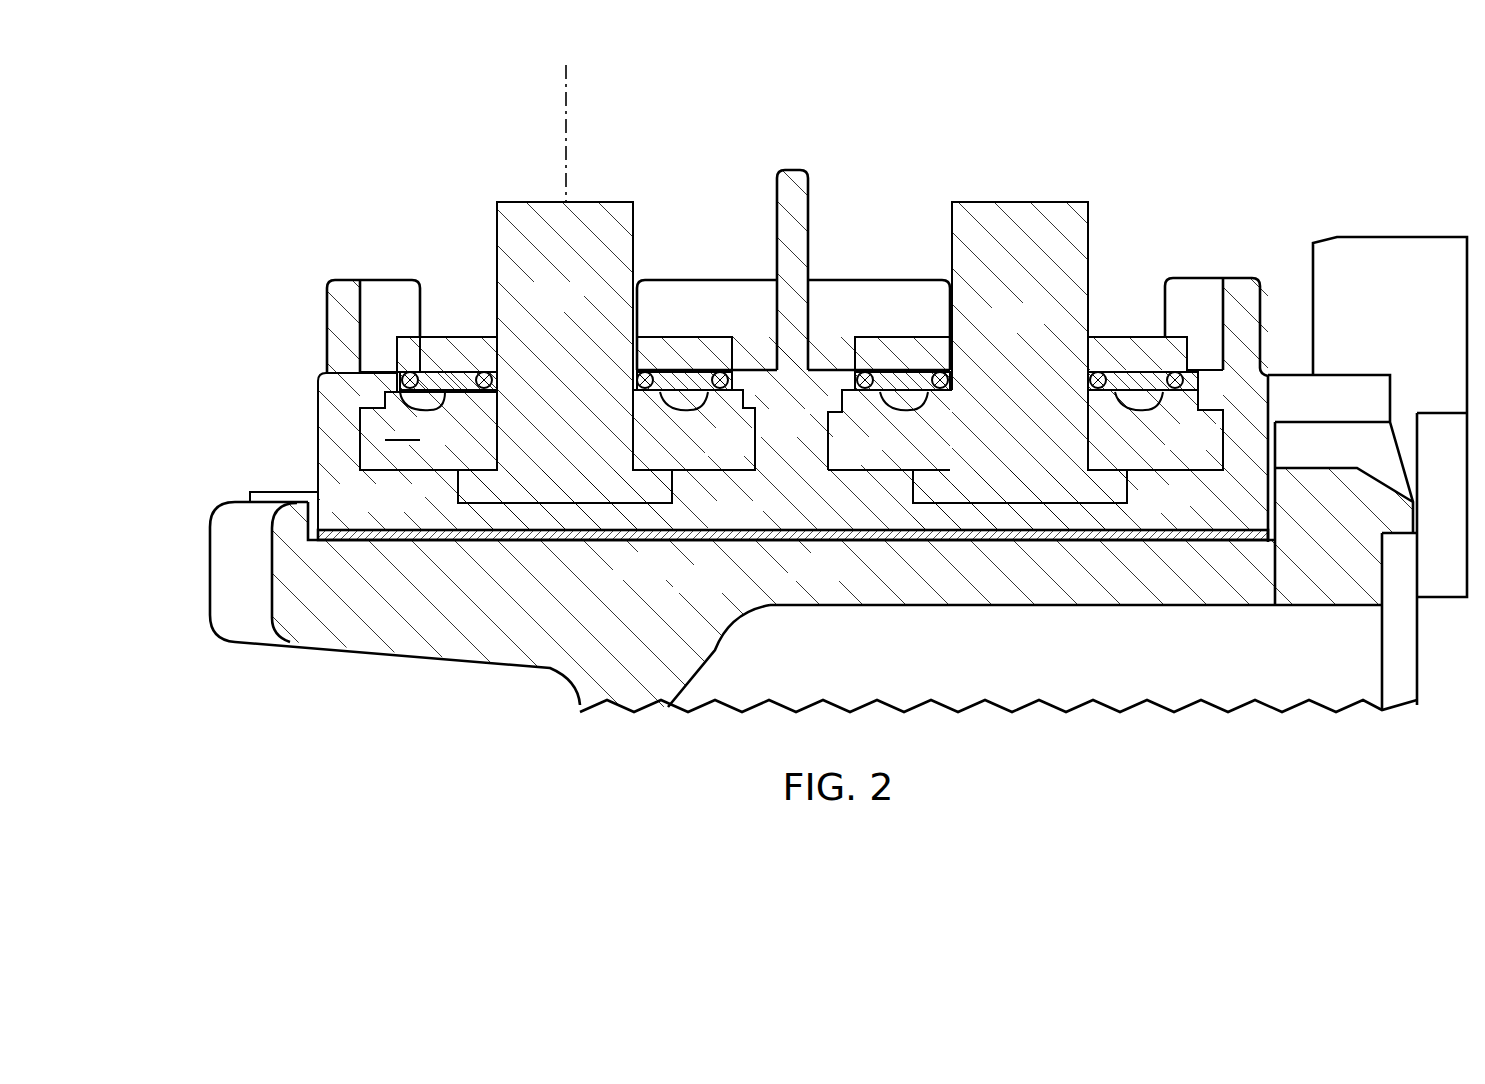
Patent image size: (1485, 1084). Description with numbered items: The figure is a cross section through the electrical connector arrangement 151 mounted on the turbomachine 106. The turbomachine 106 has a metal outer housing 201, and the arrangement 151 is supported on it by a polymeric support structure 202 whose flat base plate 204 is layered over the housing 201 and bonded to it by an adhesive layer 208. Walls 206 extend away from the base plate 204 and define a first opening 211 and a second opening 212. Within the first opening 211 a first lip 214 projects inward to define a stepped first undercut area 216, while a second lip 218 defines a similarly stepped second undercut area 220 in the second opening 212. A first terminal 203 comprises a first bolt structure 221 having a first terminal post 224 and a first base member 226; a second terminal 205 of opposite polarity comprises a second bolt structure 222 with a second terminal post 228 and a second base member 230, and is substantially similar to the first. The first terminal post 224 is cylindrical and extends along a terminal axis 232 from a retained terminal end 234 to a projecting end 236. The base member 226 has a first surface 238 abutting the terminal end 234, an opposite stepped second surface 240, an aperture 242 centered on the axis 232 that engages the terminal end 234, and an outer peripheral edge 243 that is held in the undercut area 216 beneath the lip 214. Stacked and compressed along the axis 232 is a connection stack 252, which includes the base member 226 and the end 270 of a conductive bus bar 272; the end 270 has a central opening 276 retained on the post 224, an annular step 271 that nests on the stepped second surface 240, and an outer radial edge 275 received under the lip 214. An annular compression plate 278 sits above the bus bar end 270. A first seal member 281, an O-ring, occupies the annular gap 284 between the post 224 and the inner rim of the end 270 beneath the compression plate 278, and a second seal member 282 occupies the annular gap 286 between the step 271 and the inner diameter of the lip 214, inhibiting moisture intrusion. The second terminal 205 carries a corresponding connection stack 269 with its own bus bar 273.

The turbomachine 106 is at (213, 580).
The electrical connector arrangement 151 is at (445, 185).
The outer housing 201 is at (343, 632).
The support structure 202 is at (335, 412).
The first terminal 203 is at (637, 190).
The base plate 204 is at (800, 513).
The second terminal 205 is at (1080, 180).
The walls 206 is at (327, 333).
The adhesive layer 208 is at (717, 535).
The first opening 211 is at (722, 207).
The second opening 212 is at (1155, 263).
The first lip 214 is at (395, 345).
The first undercut area 216 is at (392, 445).
The second lip 218 is at (850, 385).
The second undercut area 220 is at (845, 414).
The first bolt structure 221 is at (640, 425).
The second bolt structure 222 is at (1090, 442).
The first terminal post 224 is at (537, 311).
The first base member 226 is at (362, 455).
The second terminal post 228 is at (998, 332).
The second base member 230 is at (1148, 458).
The terminal axis 232 is at (566, 112).
The terminal end 234 is at (665, 495).
The projecting end 236 is at (512, 202).
The first surface 238 is at (724, 472).
The second surface 240 is at (686, 390).
The aperture 242 is at (497, 438).
The outer peripheral edge 243 is at (360, 440).
The connection stack 252 is at (458, 372).
The connection stack 269 is at (1188, 351).
The end 270 is at (435, 372).
The annular step 271 is at (706, 380).
The bus bar 272 is at (383, 398).
The bus bar 273 is at (1200, 405).
The outer radial edge 275 is at (392, 378).
The central opening 276 is at (643, 372).
The compression plate 278 is at (648, 348).
The first seal member 281 is at (640, 378).
The second seal member 282 is at (722, 372).
The annular gap 284 is at (500, 380).
The annular gap 286 is at (422, 396).